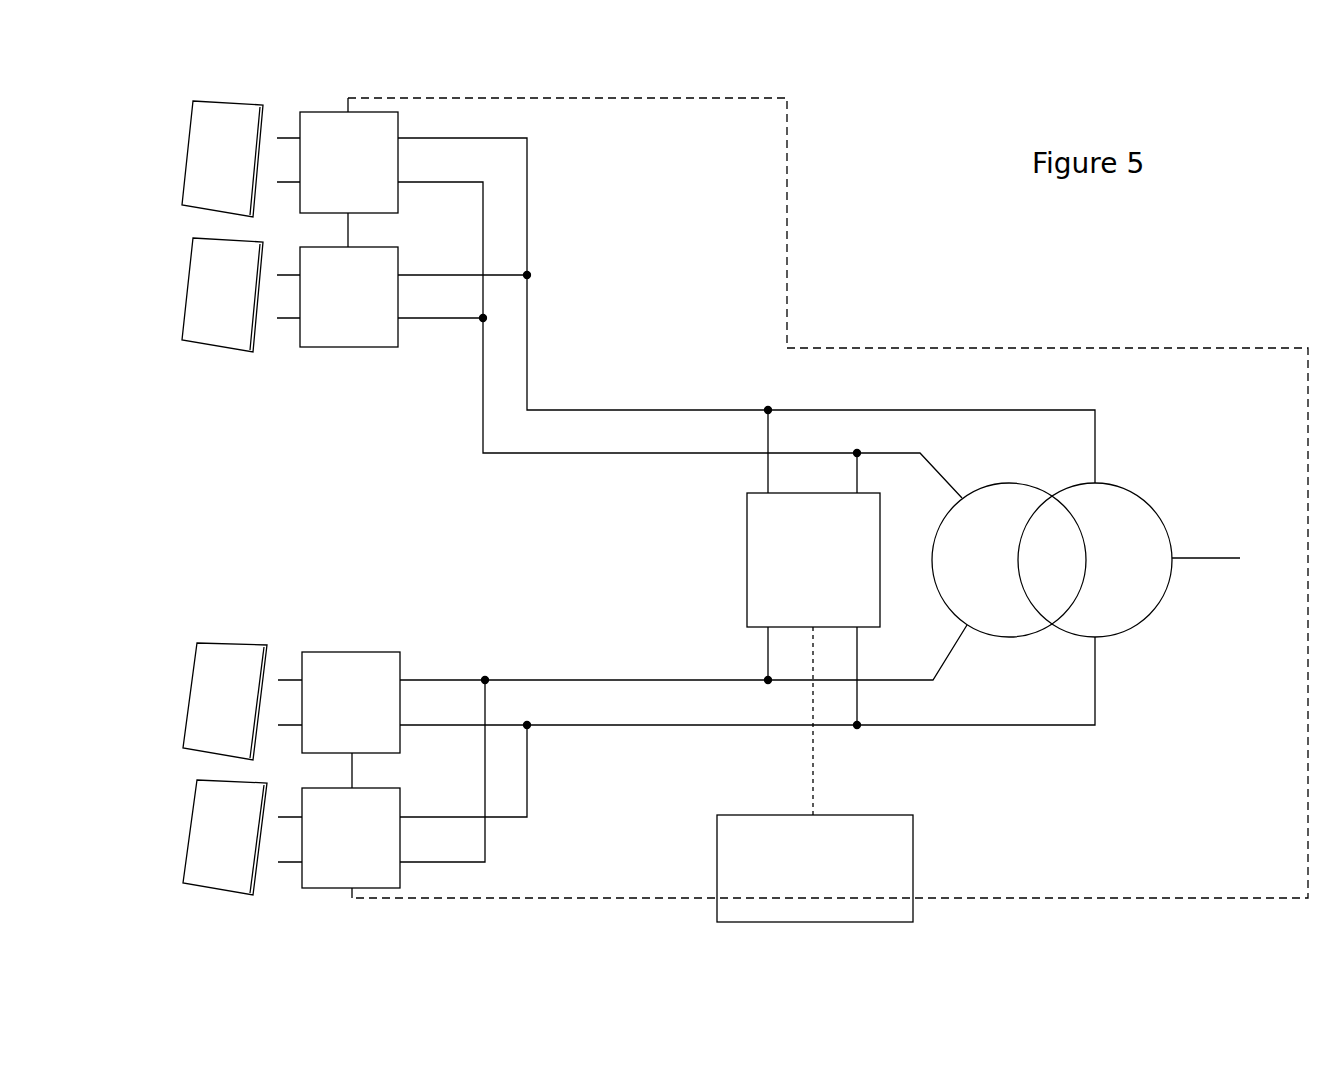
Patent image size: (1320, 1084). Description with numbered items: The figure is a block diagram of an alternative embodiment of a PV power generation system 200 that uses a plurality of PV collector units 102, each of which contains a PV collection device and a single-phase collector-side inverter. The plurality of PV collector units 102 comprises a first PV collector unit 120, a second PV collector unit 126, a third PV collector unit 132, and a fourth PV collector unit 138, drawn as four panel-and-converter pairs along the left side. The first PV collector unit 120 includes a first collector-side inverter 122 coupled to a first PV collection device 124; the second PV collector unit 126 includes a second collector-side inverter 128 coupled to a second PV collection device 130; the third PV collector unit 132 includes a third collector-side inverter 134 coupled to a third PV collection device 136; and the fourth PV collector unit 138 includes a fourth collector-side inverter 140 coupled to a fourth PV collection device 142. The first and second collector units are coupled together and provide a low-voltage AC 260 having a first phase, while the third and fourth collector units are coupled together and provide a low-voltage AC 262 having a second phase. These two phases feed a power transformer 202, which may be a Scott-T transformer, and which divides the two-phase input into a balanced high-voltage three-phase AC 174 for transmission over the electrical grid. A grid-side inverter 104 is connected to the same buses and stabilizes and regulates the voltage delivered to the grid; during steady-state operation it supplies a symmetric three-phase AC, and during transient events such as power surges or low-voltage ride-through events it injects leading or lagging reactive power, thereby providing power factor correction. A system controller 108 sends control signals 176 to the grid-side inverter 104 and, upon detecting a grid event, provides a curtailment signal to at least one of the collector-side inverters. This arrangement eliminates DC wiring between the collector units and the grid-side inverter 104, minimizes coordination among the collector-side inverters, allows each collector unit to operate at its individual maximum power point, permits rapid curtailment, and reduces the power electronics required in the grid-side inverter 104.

The PV collector units 102 is at (441, 92).
The PV power generation system 200 is at (1043, 322).
The first PV collector unit 120 is at (175, 155).
The second PV collector unit 126 is at (175, 292).
The third PV collector unit 132 is at (175, 693).
The fourth PV collector unit 138 is at (175, 828).
The first PV collection device 124 is at (253, 217).
The second PV collection device 130 is at (250, 352).
The third PV collection device 136 is at (228, 642).
The fourth PV collection device 142 is at (210, 890).
The first collector-side inverter 122 is at (398, 195).
The second collector-side inverter 128 is at (398, 330).
The third collector-side inverter 134 is at (400, 660).
The fourth collector-side inverter 140 is at (400, 875).
The low-voltage AC having a first phase 260 is at (545, 313).
The low-voltage AC having a second phase 262 is at (545, 763).
The grid-side inverter 104 is at (880, 618).
The control signals 176 is at (815, 765).
The system controller 108 is at (913, 845).
The power transformer 202 is at (1110, 482).
The high-voltage three-phase AC 174 is at (1206, 553).